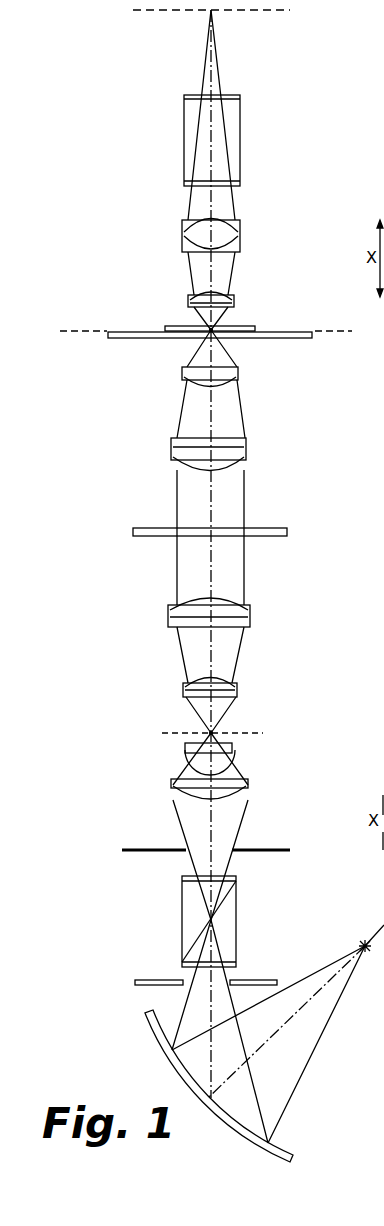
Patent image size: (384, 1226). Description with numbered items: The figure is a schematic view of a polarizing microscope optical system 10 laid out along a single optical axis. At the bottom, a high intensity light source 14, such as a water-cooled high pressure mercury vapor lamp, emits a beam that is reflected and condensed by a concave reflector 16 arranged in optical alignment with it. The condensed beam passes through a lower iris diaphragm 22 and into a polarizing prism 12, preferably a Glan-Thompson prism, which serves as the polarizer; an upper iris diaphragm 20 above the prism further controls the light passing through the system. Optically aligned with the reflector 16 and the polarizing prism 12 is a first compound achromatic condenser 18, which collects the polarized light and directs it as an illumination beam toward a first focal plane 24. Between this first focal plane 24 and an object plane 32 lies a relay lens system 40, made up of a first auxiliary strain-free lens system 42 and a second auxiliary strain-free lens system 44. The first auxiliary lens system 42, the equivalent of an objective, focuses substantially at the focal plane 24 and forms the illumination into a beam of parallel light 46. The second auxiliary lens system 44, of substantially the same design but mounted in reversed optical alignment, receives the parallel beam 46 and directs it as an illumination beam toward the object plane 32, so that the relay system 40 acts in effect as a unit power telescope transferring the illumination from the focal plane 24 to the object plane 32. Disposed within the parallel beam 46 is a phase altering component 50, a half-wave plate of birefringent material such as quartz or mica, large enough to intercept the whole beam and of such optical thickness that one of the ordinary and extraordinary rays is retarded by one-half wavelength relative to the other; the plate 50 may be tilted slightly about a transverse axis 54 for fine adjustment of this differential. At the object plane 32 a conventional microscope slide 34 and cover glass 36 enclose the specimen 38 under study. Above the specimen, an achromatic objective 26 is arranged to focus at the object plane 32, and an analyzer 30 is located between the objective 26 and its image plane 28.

The polarizing microscope optical system 10 is at (252, 430).
The polarizing prism 12 is at (238, 929).
The high intensity light source 14 is at (368, 950).
The concave reflector 16 is at (283, 1151).
The first compound achromatic condenser 18 is at (278, 737).
The upper iris diaphragm 20 is at (267, 848).
The lower iris diaphragm 22 is at (152, 978).
The first focal plane 24 is at (162, 733).
The achromatic objective 26 is at (256, 221).
The image plane 28 is at (256, 11).
The analyzer 30 is at (242, 129).
The object plane 32 is at (96, 328).
The microscope slide 34 is at (297, 341).
The cover glass 36 is at (255, 328).
The specimen 38 is at (216, 328).
The relay lens system 40 is at (123, 350).
The first auxiliary strain-free lens system 42 is at (165, 598).
The second auxiliary strain-free lens system 44 is at (167, 355).
The beam of parallel light 46 is at (177, 497).
The phase altering component 50 is at (270, 528).
The transverse axis 54 is at (211, 533).